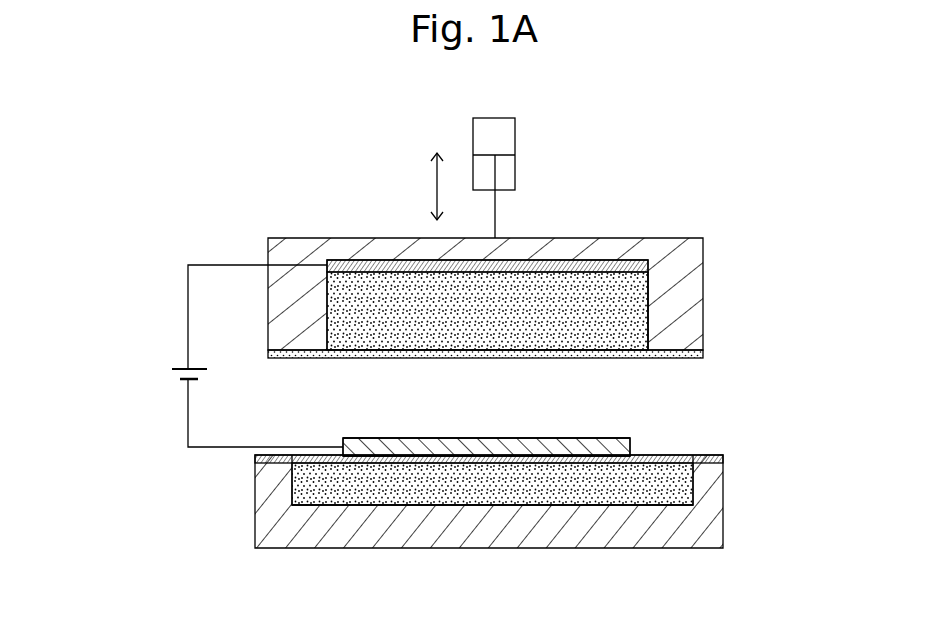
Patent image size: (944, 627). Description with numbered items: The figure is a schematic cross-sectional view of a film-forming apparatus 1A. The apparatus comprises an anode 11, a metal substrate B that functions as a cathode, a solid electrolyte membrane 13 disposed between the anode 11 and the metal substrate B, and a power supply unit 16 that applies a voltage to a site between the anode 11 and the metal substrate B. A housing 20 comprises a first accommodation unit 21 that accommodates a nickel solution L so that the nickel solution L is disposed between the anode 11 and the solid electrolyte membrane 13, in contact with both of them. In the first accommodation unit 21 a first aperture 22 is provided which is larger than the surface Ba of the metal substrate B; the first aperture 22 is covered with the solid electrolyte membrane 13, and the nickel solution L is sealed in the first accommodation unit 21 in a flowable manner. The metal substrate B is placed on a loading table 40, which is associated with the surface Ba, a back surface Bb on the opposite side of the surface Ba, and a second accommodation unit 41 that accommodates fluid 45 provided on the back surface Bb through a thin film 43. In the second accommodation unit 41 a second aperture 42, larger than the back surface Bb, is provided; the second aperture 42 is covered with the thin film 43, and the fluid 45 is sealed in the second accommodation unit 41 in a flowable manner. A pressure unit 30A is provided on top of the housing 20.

The film-forming apparatus 1A is at (255, 167).
The pressure unit 30A is at (510, 146).
The housing 20 is at (665, 260).
The anode 11 is at (598, 258).
The first accommodation unit 21 is at (380, 308).
The nickel solution L is at (378, 285).
The first aperture 22 is at (648, 349).
The solid electrolyte membrane 13 is at (325, 360).
The power supply unit 16 is at (172, 370).
The loading table 40 is at (713, 473).
The second aperture 42 is at (690, 462).
The second accommodation unit 41 is at (345, 490).
The fluid 45 is at (382, 498).
The thin film 43 is at (412, 440).
The metal substrate B is at (480, 437).
The surface Ba is at (380, 438).
The back surface Bb is at (555, 458).